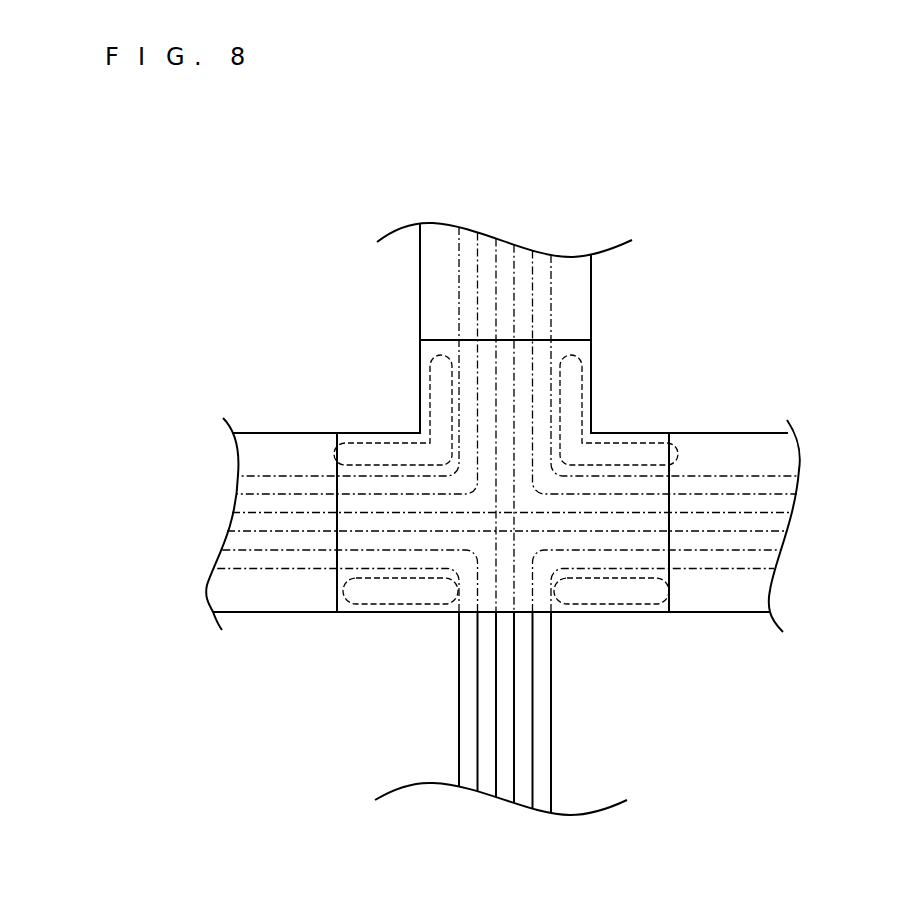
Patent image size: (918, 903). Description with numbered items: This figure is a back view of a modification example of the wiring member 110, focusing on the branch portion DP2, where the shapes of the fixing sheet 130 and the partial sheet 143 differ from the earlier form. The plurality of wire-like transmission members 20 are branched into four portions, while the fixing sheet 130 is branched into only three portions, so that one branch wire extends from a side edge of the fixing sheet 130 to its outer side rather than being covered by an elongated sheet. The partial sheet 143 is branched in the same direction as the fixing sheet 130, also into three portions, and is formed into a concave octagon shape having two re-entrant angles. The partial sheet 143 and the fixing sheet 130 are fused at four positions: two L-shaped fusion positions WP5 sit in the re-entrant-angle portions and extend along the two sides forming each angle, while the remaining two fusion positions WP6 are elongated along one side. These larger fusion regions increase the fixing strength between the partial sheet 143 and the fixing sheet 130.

The wiring member 110 is at (265, 213).
The fixing sheet 130 is at (570, 294).
The partial sheet 143 is at (672, 457).
The wire-like transmission member 20 is at (467, 782).
The fusion position WP5 is at (420, 374).
The fusion position WP6 is at (407, 604).
The branch portion DP2 is at (417, 433).